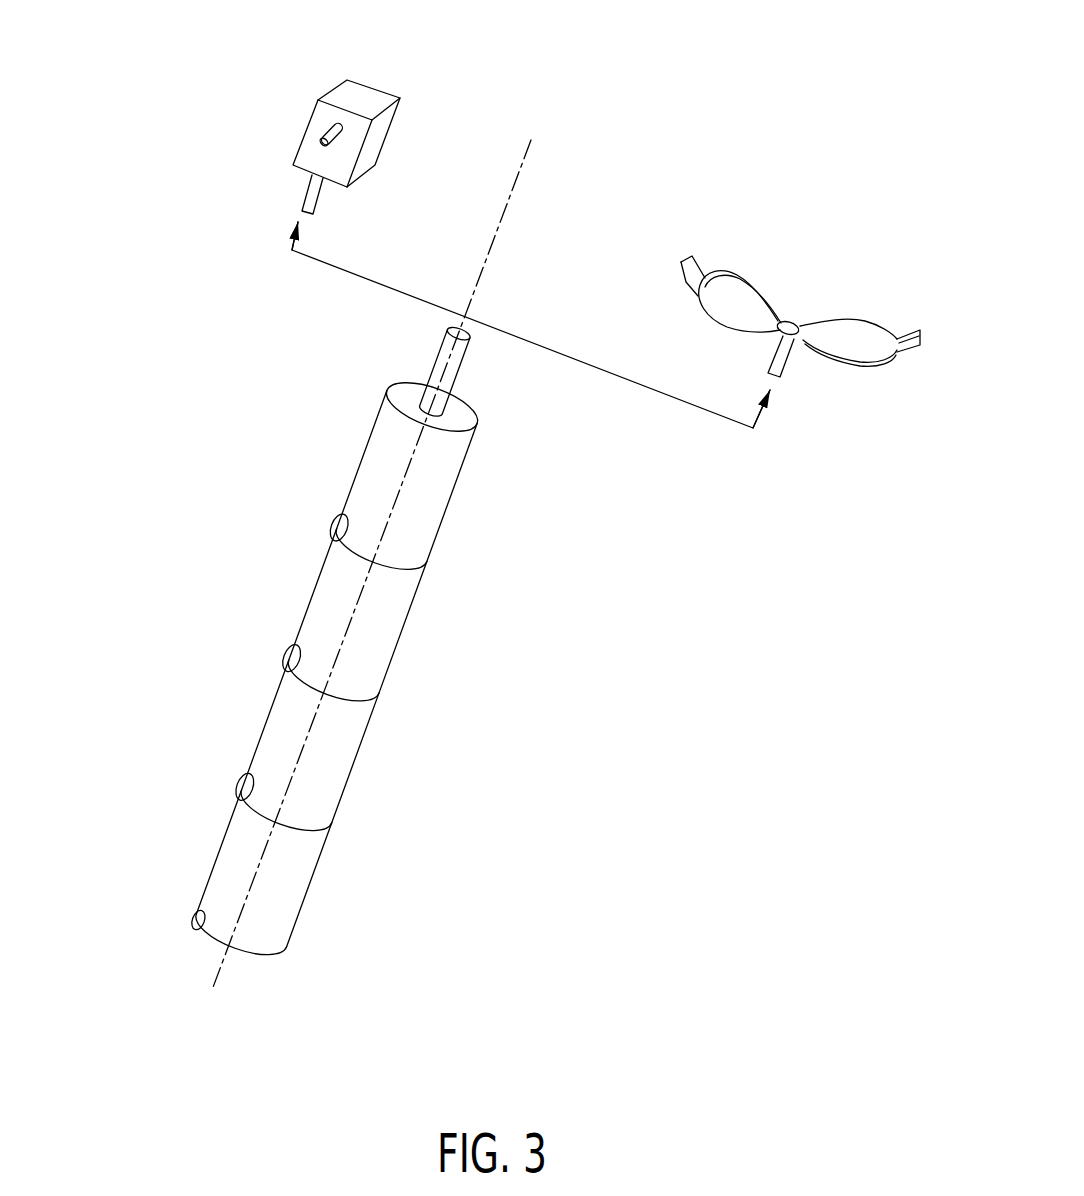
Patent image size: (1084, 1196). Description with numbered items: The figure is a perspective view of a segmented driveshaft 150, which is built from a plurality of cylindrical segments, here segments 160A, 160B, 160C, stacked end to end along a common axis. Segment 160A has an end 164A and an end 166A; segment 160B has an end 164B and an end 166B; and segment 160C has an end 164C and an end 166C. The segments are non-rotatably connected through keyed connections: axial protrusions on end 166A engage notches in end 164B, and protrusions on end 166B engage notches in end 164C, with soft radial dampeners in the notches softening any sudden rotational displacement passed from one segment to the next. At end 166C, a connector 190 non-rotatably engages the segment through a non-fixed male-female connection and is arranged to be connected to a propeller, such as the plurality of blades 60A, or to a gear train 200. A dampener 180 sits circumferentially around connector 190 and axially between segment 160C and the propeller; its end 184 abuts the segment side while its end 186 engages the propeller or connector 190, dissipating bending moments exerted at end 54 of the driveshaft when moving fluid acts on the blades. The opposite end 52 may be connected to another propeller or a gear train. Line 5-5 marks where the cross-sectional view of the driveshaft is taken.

The line 5- 5 is at (533, 137).
The end 52 is at (292, 1002).
The end 54 is at (407, 332).
The plurality of blades 60A is at (775, 263).
The segmented driveshaft 150 is at (147, 280).
The segment 160A is at (220, 873).
The segment 160B is at (280, 728).
The segment 160C is at (327, 605).
The end 164A is at (200, 936).
The end 164B is at (249, 773).
The end 164C is at (295, 648).
The end 166A is at (253, 812).
The end 166B is at (300, 690).
The end 166C is at (340, 553).
The dampener 180 is at (380, 452).
The end 184 is at (343, 516).
The end 186 is at (402, 398).
The connector 190 is at (440, 368).
The gear train 200 is at (363, 93).